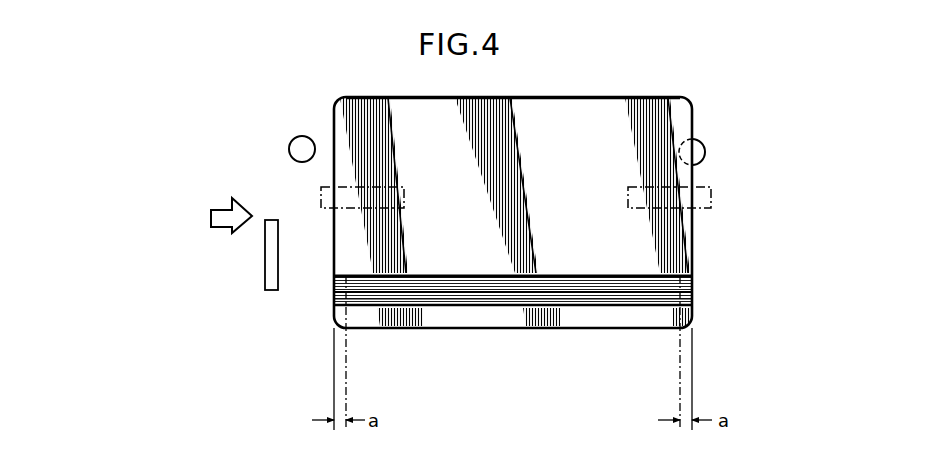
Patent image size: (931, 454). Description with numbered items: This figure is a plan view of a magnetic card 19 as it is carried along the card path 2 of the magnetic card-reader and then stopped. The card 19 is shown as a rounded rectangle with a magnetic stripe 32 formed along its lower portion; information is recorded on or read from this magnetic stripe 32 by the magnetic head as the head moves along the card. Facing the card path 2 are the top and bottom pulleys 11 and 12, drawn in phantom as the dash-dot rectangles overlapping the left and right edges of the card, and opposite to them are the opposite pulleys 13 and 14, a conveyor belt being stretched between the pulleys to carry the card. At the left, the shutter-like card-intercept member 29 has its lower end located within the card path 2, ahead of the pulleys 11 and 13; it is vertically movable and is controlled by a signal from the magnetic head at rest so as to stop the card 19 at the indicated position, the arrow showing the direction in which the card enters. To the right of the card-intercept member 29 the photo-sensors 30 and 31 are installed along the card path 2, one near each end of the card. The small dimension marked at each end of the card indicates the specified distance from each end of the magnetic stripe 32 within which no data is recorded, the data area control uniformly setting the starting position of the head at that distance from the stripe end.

The card path 2 is at (257, 163).
The top pulley 11 is at (341, 269).
The opposite pulley 13 is at (330, 198).
The bottom pulley 12 is at (715, 275).
The opposite pulley 14 is at (703, 202).
The magnetic card 19 is at (614, 96).
The card-intercept member 29 is at (265, 283).
The photo-sensor 30 is at (310, 137).
The photo-sensor 31 is at (703, 150).
The magnetic stripe 32 is at (604, 292).